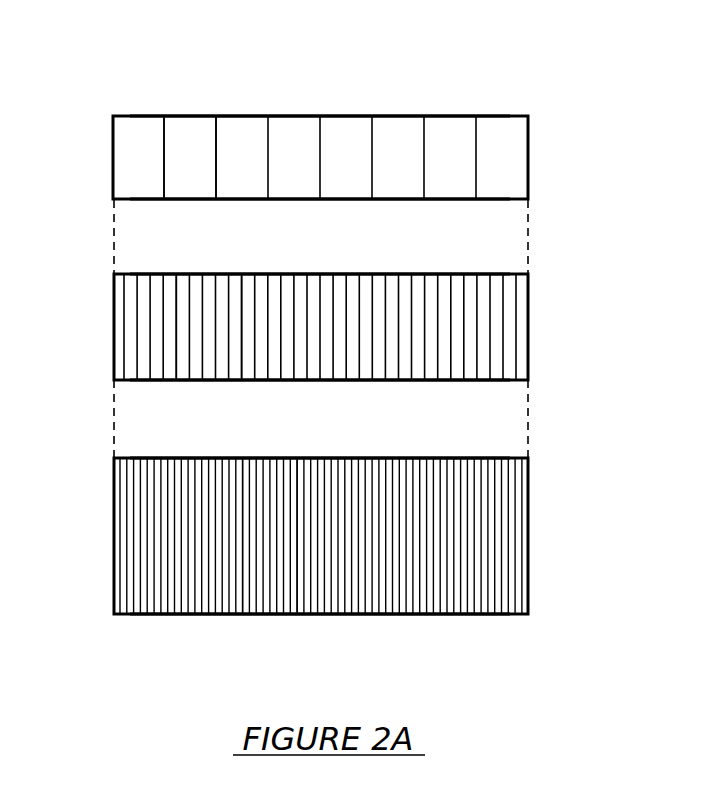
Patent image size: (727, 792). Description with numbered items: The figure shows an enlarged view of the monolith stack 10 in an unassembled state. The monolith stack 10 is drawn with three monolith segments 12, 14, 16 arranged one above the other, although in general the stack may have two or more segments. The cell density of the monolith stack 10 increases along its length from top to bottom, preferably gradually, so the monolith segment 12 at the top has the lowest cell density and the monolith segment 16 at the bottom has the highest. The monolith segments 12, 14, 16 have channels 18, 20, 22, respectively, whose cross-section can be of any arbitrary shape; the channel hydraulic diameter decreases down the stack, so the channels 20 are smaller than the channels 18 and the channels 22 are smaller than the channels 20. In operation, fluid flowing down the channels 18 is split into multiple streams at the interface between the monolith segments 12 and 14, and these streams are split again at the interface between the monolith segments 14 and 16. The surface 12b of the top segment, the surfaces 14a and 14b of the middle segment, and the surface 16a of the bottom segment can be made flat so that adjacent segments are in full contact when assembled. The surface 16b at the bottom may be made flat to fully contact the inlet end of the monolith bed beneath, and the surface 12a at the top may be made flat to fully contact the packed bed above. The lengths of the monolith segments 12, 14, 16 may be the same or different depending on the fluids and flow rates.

The monolith stack 10 is at (424, 97).
The monolith segment 12 is at (528, 153).
The surface 12a is at (299, 115).
The surface 12b is at (512, 200).
The monolith segment 14 is at (528, 338).
The surface 14a is at (135, 273).
The surface 14b is at (132, 381).
The monolith segment 16 is at (528, 527).
The surface 16a is at (515, 457).
The surface 16b is at (156, 615).
The channels 18 is at (137, 137).
The channels 20 is at (238, 310).
The channels 22 is at (242, 473).